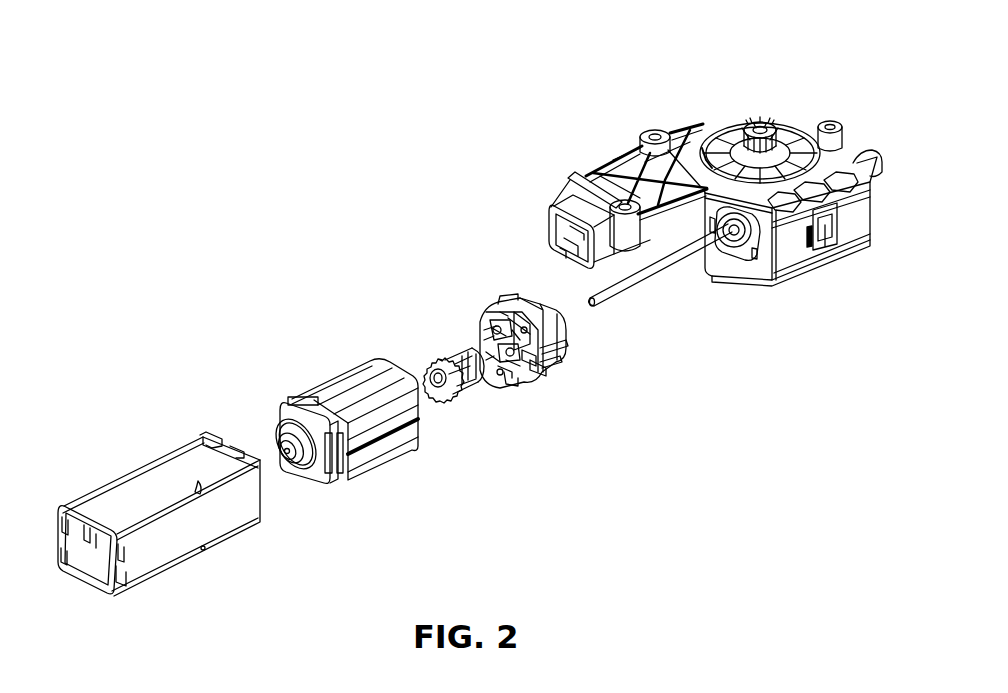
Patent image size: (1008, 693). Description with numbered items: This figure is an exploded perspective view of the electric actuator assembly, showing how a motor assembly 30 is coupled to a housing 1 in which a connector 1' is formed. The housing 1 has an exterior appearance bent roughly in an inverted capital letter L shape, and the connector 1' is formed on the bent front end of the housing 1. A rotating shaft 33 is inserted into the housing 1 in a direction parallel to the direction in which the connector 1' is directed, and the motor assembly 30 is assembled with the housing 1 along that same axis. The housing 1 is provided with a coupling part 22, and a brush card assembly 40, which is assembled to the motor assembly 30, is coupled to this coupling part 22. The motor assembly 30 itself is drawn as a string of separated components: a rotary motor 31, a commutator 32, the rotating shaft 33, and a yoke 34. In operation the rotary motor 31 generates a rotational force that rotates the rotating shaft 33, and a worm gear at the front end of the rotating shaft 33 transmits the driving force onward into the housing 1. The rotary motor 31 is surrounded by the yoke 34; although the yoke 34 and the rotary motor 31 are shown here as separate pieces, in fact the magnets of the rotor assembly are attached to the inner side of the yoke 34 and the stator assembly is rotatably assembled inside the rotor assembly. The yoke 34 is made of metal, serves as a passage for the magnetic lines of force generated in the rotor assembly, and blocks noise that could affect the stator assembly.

The housing 1 is at (716, 145).
The connector 1' is at (579, 204).
The coupling part 22 is at (757, 240).
The motor assembly 30 is at (418, 309).
The rotary motor 31 is at (380, 450).
The commutator 32 is at (465, 392).
The rotating shaft 33 is at (622, 291).
The yoke 34 is at (185, 547).
The brush card assembly 40 is at (548, 373).